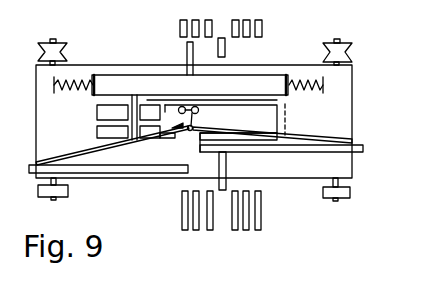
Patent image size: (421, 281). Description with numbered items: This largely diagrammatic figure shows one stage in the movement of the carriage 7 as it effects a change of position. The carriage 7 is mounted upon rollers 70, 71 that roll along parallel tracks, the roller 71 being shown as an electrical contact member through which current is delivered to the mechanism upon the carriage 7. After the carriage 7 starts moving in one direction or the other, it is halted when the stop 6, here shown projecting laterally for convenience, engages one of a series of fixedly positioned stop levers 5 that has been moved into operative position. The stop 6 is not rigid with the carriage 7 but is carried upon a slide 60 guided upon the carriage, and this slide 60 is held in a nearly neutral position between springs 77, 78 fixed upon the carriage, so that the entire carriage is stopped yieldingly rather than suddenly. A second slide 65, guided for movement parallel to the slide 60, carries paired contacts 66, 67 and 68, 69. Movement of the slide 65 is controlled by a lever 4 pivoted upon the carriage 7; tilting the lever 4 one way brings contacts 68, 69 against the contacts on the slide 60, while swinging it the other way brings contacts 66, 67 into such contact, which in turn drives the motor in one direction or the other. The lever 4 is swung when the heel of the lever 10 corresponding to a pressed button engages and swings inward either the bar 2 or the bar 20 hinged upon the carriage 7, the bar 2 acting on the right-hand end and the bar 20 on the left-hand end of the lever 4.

The bar 2 is at (306, 150).
The lever 4 is at (297, 136).
The stop lever 5 is at (226, 48).
The stop 6 is at (186, 48).
The carriage 7 is at (343, 125).
The lever 10 is at (227, 166).
The bar 20 is at (163, 170).
The slide 60 is at (190, 86).
The second slide 65 is at (216, 126).
The contact 66 is at (115, 115).
The contact 67 is at (118, 133).
The contact 68 is at (140, 108).
The contact 69 is at (142, 132).
The roller 70 is at (346, 46).
The roller 71 is at (346, 195).
The spring 77 is at (294, 78).
The spring 78 is at (73, 75).